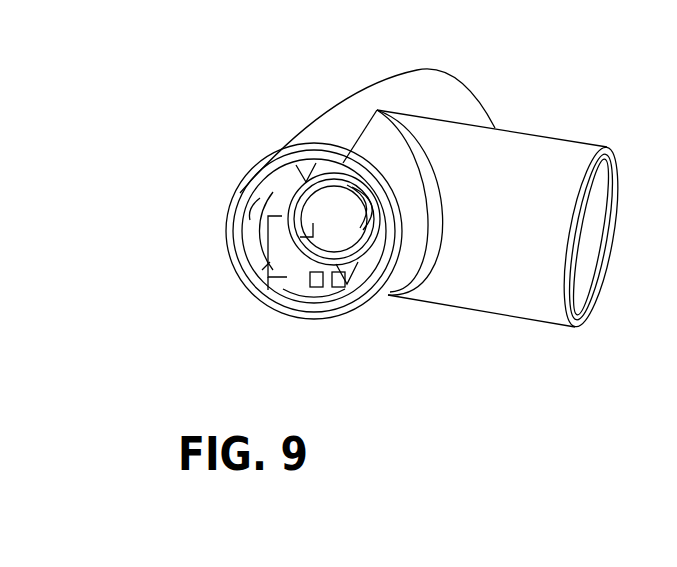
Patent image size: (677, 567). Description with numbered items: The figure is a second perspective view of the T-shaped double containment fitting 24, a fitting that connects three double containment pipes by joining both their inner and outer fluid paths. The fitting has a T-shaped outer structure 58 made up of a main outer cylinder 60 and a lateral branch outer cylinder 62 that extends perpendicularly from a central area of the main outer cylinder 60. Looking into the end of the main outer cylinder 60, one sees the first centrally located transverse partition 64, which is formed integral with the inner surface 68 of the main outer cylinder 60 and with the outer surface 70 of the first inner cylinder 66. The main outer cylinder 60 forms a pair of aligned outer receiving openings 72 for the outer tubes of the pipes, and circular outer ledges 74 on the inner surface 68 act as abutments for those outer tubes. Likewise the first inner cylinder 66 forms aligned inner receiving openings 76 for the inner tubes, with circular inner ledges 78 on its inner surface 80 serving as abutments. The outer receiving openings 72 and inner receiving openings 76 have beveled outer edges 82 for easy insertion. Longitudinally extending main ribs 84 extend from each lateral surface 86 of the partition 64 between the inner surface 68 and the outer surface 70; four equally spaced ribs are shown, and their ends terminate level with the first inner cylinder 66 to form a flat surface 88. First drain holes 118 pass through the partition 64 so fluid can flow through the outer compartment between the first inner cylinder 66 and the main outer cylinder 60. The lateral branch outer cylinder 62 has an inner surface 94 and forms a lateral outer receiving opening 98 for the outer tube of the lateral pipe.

The T-shaped double containment fitting 24 is at (520, 85).
The T-shaped outer structure 58 is at (588, 138).
The main outer cylinder 60 is at (363, 78).
The lateral branch outer cylinder 62 is at (492, 317).
The first centrally located transverse partition 64 is at (292, 170).
The first inner cylinder 66 is at (360, 265).
The inner surface of the main outer cylinder 68 is at (255, 198).
The outer surface of the first inner cylinder 70 is at (387, 250).
The aligned outer receiving openings 72 is at (268, 272).
The circular outer ledges 74 is at (255, 274).
The aligned inner receiving openings 76 is at (352, 265).
The circular inner ledges 78 is at (268, 217).
The inner surface of the first inner cylinder 80 is at (300, 237).
The beveled outer edges 82 is at (268, 298).
The longitudinally extending main ribs 84 is at (268, 163).
The lateral surface of the first centrally located transverse partition 86 is at (340, 152).
The flat surface 88 is at (365, 165).
The inner surface of the lateral branch outer cylinder 94 is at (583, 250).
The lateral outer receiving opening 98 is at (605, 212).
The first drain holes 118 is at (318, 158).